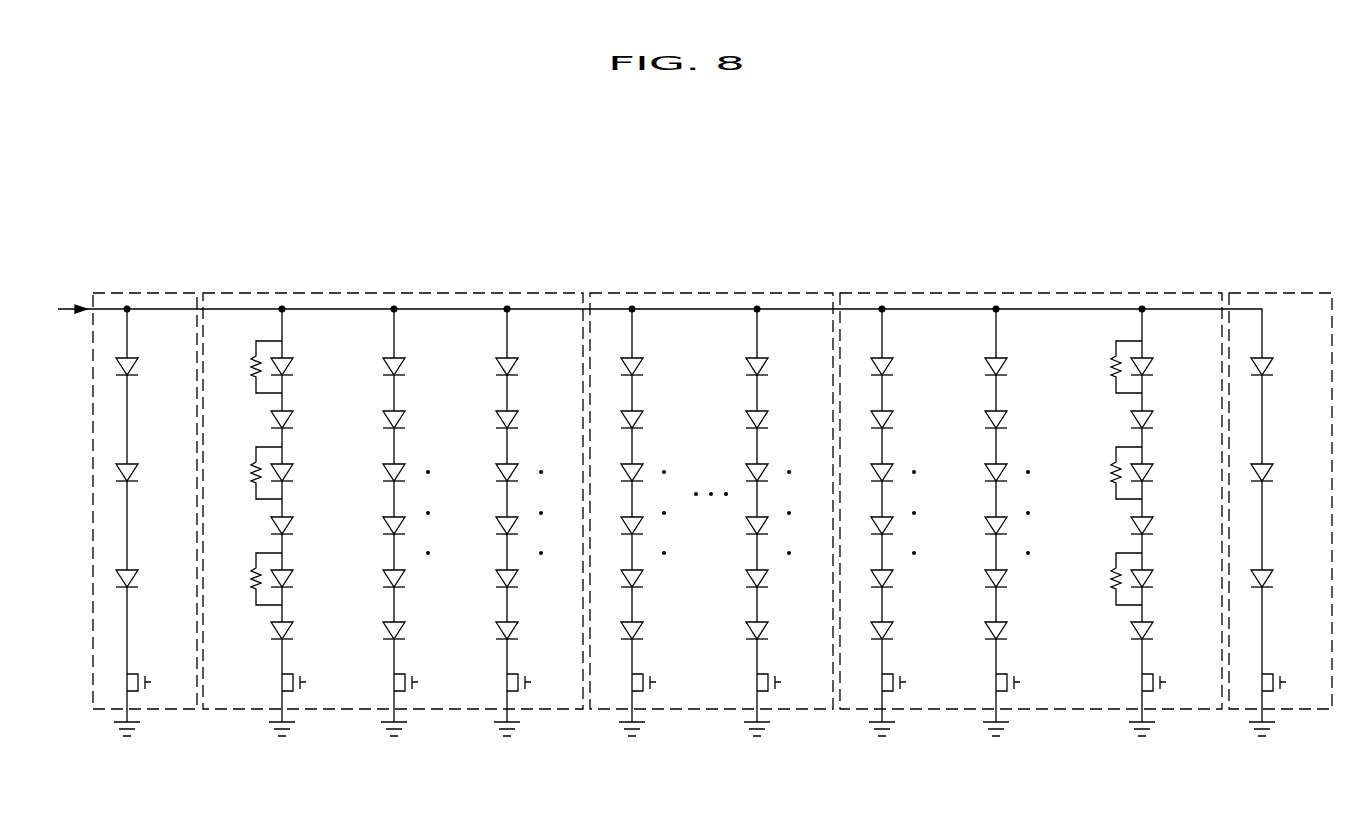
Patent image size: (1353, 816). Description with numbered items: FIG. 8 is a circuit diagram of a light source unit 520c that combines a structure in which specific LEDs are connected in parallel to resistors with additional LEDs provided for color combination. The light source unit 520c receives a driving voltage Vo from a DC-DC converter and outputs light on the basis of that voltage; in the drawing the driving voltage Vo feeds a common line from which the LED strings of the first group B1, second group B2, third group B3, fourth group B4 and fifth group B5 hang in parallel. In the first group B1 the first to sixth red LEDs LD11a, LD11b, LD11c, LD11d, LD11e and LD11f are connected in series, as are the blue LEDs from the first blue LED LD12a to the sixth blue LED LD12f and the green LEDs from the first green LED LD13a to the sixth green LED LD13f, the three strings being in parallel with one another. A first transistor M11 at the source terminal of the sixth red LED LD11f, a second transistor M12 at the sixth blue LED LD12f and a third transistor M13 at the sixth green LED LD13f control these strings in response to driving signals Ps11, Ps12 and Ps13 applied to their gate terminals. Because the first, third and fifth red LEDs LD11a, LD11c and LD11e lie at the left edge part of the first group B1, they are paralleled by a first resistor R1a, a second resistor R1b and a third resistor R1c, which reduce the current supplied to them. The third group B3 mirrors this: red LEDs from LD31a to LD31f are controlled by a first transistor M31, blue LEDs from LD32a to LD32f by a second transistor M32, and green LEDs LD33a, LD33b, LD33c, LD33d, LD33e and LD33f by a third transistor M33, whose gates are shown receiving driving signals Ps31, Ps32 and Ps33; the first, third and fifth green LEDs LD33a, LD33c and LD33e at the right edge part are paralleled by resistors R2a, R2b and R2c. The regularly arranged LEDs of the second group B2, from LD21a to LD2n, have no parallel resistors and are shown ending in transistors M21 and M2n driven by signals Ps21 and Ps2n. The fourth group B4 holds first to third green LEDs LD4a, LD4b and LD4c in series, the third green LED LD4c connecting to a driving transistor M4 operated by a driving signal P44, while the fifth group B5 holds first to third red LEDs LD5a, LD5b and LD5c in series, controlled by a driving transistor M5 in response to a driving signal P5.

The light source unit 520c is at (1057, 183).
The driving voltage Vo is at (647, 510).
The fourth group B4 is at (173, 292).
The first group B1 is at (505, 292).
The second group B2 is at (753, 292).
The third group B3 is at (1160, 292).
The fifth group B5 is at (1288, 292).
The first green LED LD4a is at (150, 366).
The second green LED LD4b is at (150, 472).
The third green LED LD4c is at (150, 578).
The driving transistor M4 is at (121, 683).
The driving signal P44 is at (166, 683).
The first resistor R1a is at (247, 367).
The second resistor R1b is at (247, 473).
The third resistor R1c is at (247, 579).
The first red LED LD11a is at (311, 366).
The second red LED LD11b is at (311, 419).
The third red LED LD11c is at (311, 472).
The fourth red LED LD11d is at (311, 525).
The fifth red LED LD11e is at (311, 578).
The sixth red LED LD11f is at (310, 630).
The first transistor M11 is at (269, 683).
The driving signal Ps11 is at (326, 683).
The first blue LED LD12a is at (423, 366).
The sixth blue LED LD12f is at (422, 630).
The second transistor M12 is at (381, 683).
The driving signal Ps12 is at (438, 683).
The first green LED LD13a is at (536, 366).
The sixth green LED LD13f is at (535, 630).
The third transistor M13 is at (494, 683).
The driving signal Ps13 is at (551, 683).
The LED LD21a is at (661, 366).
The switching transistor M21 is at (619, 683).
The control signal Ps21 is at (676, 683).
The LED LD2n is at (781, 630).
The switching transistor M2n is at (744, 683).
The control signal Ps2n is at (801, 683).
The first red LED LD31a is at (911, 366).
The sixth red LED LD31f is at (910, 630).
The first transistor M31 is at (869, 683).
The control signal Ps31 is at (926, 683).
The first blue LED LD32a is at (1025, 366).
The sixth blue LED LD32f is at (1024, 630).
The second transistor M32 is at (983, 683).
The control signal Ps32 is at (1040, 683).
The first resistor R2a is at (1107, 367).
The second resistor R2b is at (1107, 473).
The third resistor R2c is at (1107, 579).
The first green LED LD33a is at (1171, 366).
The second green LED LD33b is at (1171, 419).
The third green LED LD33c is at (1171, 472).
The fourth green LED LD33d is at (1171, 525).
The fifth green LED LD33e is at (1171, 578).
The sixth green LED LD33f is at (1170, 630).
The third transistor M33 is at (1129, 683).
The control signal Ps33 is at (1186, 683).
The first red LED LD5a is at (1285, 366).
The second red LED LD5b is at (1285, 472).
The third red LED LD5c is at (1285, 578).
The driving transistor M5 is at (1256, 683).
The driving signal P5 is at (1295, 683).